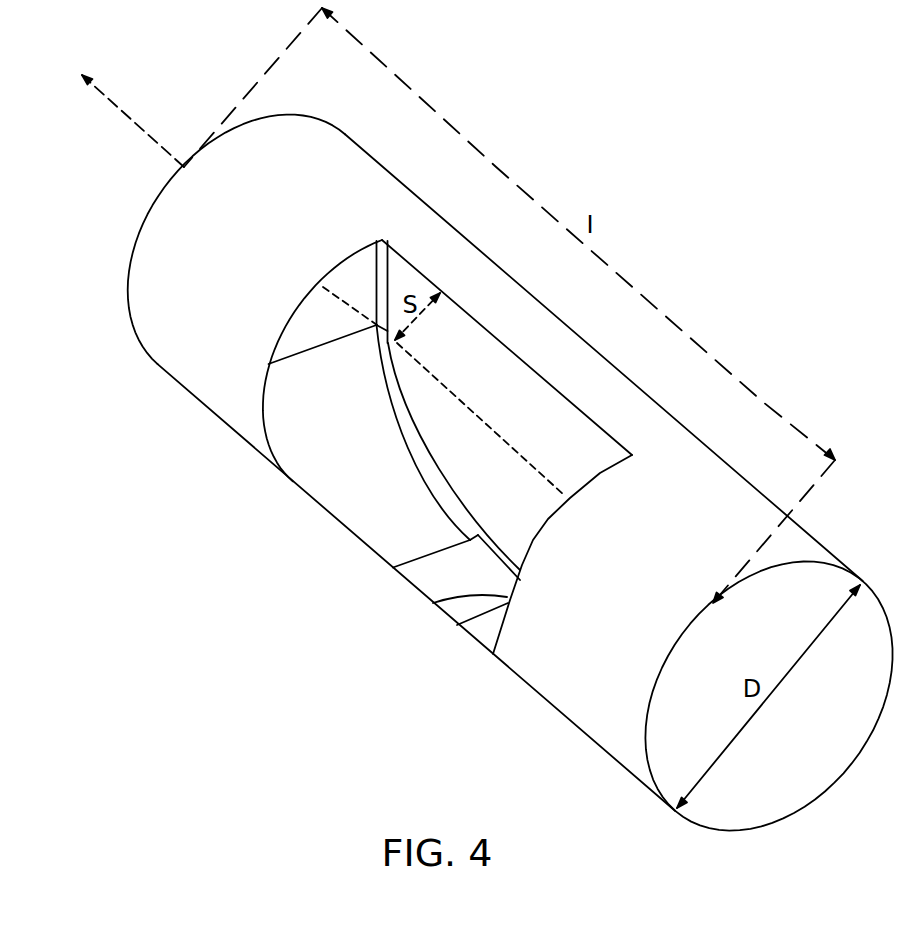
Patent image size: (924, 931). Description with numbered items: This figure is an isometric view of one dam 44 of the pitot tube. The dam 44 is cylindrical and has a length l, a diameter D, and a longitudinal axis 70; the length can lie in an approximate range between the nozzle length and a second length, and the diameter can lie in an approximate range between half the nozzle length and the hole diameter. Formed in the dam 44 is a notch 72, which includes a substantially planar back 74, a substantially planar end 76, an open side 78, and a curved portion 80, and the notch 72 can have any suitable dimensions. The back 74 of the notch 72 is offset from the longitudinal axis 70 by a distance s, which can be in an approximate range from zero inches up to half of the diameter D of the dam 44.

The dam 44 is at (727, 209).
The longitudinal axis 70 is at (140, 127).
The notch 72 is at (332, 537).
The back 74 is at (475, 336).
The end 76 is at (433, 603).
The open side 78 is at (575, 386).
The curved portion 80 is at (285, 433).